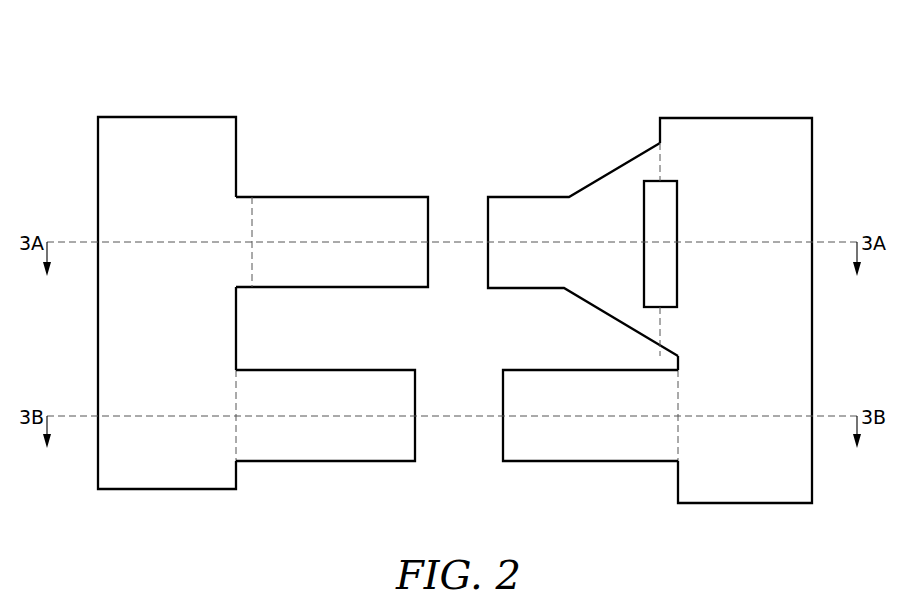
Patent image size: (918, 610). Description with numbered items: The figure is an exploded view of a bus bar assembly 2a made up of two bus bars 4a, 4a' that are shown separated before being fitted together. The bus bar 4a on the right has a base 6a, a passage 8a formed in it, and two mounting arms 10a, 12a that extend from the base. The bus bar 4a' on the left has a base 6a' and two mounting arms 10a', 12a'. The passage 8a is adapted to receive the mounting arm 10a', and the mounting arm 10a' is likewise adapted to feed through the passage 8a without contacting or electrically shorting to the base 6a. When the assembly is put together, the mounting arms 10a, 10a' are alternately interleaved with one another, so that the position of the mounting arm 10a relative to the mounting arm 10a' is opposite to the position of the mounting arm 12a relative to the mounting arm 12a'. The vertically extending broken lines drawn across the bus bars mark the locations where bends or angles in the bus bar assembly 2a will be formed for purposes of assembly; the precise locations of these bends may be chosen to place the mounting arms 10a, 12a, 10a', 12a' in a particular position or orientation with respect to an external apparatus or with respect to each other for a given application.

The bus bar assembly 2a is at (474, 110).
The bus bar 4a is at (682, 283).
The bus bar 4a' is at (230, 292).
The base 6a is at (761, 310).
The base 6a' is at (134, 303).
The passage 8a is at (677, 213).
The mounting arm 10a is at (682, 249).
The mounting arm 10a' is at (332, 209).
The mounting arm 12a is at (590, 453).
The mounting arm 12a' is at (325, 453).